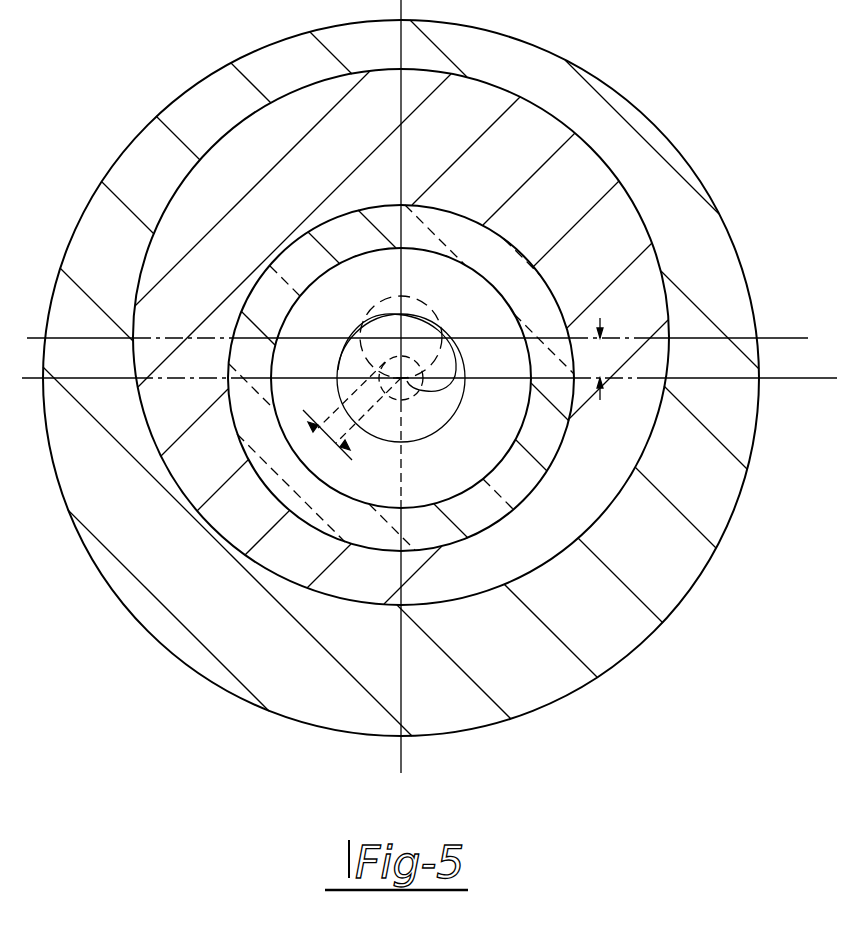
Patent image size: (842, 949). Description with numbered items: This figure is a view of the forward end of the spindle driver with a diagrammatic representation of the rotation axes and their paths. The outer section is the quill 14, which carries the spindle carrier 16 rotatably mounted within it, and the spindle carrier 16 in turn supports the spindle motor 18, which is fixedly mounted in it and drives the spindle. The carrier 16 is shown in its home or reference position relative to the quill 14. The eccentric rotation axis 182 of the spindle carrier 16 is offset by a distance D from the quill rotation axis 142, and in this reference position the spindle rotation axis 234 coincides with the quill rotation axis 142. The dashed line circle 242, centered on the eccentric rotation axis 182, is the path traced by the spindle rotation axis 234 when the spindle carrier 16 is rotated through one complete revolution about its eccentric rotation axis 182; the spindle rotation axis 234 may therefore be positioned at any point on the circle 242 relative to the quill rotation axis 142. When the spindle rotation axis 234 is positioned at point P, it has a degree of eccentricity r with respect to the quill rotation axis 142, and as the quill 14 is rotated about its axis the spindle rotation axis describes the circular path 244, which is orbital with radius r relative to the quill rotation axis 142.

The quill 14 is at (655, 543).
The spindle carrier 16 is at (503, 182).
The spindle motor 18 is at (355, 248).
The quill rotation axis 142 is at (399, 383).
The eccentric rotation axis 182 is at (412, 331).
The spindle rotation axis 234 is at (420, 387).
The dashed line circle 242 is at (433, 290).
The circular path 244 is at (415, 396).
The point P is at (392, 376).
The distance D is at (599, 359).